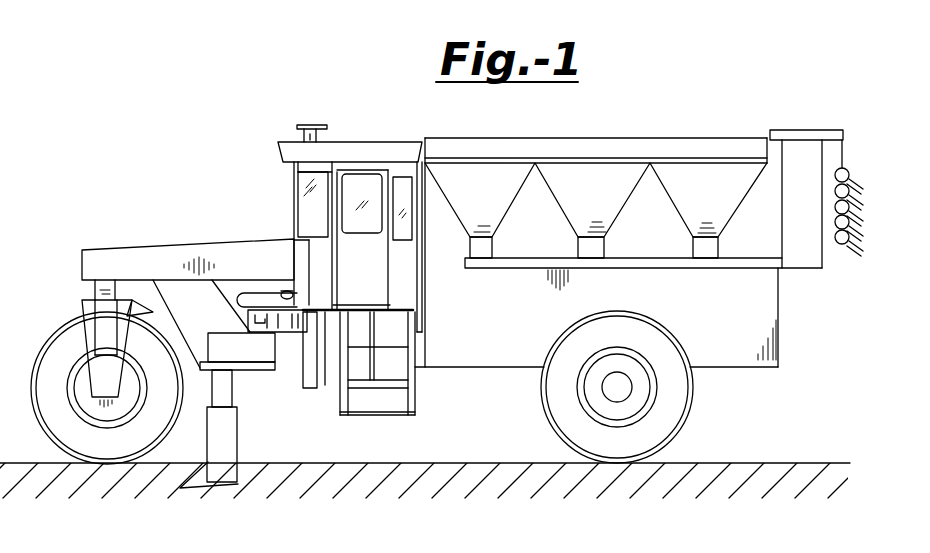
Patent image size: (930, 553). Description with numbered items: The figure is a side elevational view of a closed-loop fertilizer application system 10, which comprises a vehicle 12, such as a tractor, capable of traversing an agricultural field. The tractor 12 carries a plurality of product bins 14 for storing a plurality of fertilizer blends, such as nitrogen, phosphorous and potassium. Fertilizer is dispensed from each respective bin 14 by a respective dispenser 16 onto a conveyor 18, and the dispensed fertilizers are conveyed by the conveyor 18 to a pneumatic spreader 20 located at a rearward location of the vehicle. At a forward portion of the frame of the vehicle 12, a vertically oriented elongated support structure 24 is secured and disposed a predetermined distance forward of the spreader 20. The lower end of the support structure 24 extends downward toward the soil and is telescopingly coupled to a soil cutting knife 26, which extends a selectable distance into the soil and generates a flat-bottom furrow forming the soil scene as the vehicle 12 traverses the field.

The closed-loop fertilizer application system 10 is at (228, 110).
The vehicle 12 is at (168, 247).
The product bins 14 is at (445, 193).
The dispenser 16 is at (470, 243).
The conveyor 18 is at (517, 270).
The pneumatic spreader 20 is at (842, 130).
The elongated support structure 24 is at (232, 392).
The soil cutting knife 26 is at (237, 447).